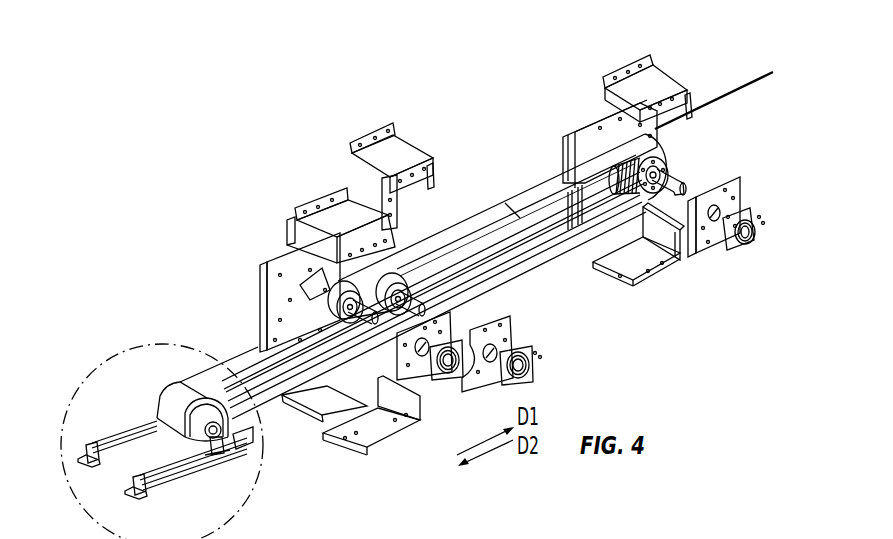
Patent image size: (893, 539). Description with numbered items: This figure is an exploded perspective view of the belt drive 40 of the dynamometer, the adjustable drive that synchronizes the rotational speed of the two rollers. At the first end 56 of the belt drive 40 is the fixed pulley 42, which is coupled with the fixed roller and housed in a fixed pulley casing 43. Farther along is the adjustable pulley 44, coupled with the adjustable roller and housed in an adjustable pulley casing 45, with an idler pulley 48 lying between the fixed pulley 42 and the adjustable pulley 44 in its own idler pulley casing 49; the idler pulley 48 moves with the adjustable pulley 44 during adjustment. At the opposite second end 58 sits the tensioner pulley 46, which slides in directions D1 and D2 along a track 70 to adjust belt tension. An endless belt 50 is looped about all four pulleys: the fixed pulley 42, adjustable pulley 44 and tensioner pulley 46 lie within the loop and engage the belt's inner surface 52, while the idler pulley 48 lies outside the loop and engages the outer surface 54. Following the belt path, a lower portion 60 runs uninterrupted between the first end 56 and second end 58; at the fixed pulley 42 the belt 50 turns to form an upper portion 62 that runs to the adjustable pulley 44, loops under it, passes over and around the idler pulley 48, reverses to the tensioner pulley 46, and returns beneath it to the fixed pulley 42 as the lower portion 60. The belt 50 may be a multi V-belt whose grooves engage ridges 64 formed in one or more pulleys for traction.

The belt drive 40 is at (704, 97).
The fixed pulley 42 is at (684, 160).
The fixed pulley casing 43 is at (660, 80).
The adjustable pulley 44 is at (340, 309).
The adjustable pulley casing 45 is at (336, 213).
The tensioner pulley 46 is at (180, 420).
The idler pulley 48 is at (408, 284).
The idler pulley casing 49 is at (368, 138).
The endless belt 50 is at (672, 148).
The inner surface 52 is at (557, 230).
The outer surface 54 is at (545, 195).
The first end 56 is at (572, 170).
The second end 58 is at (150, 399).
The lower portion 60 is at (274, 410).
The upper portion 62 is at (497, 198).
The ridges 64 is at (650, 148).
The track 70 is at (160, 473).